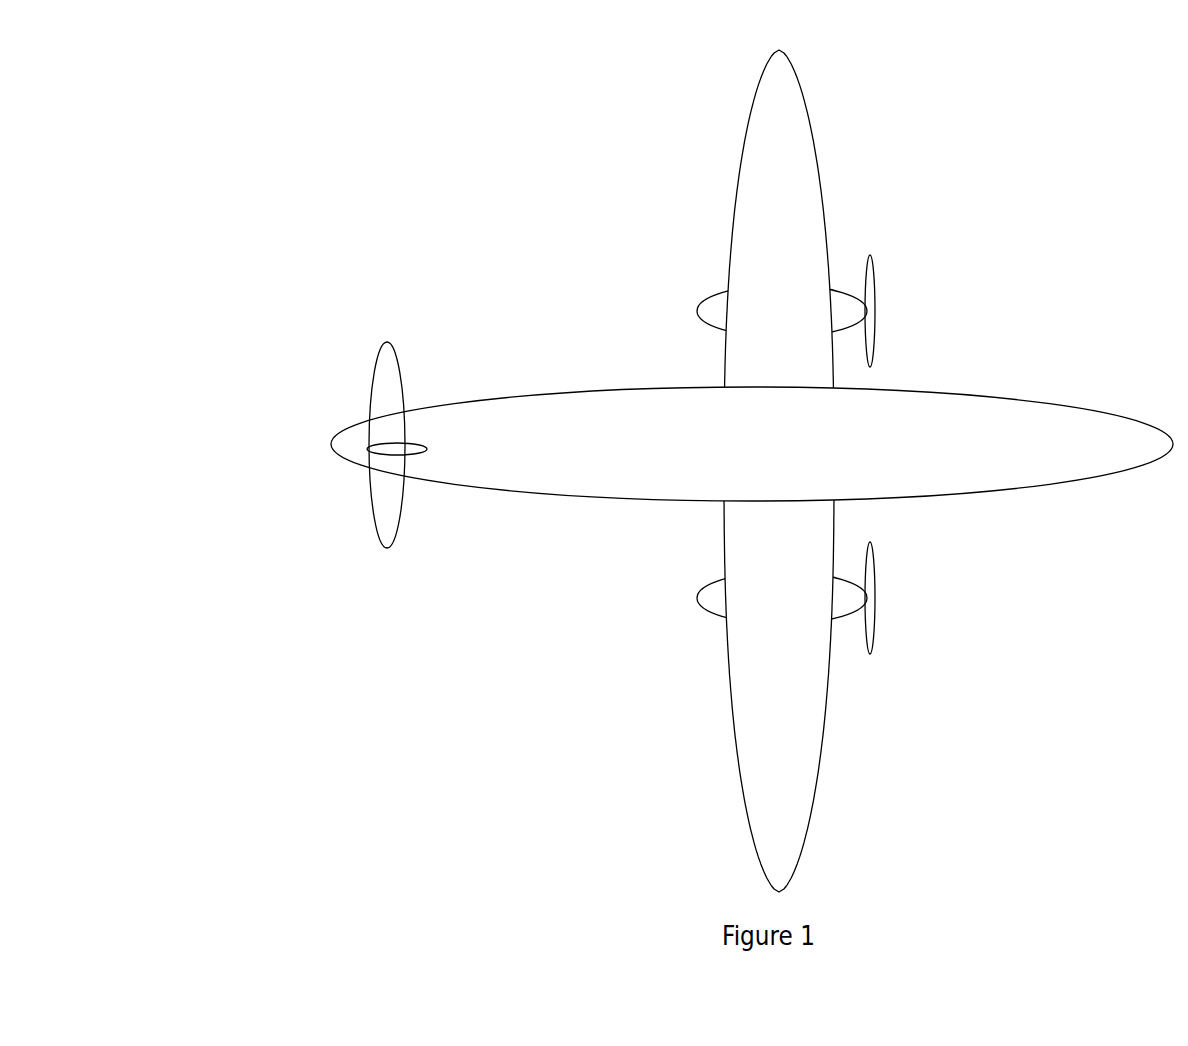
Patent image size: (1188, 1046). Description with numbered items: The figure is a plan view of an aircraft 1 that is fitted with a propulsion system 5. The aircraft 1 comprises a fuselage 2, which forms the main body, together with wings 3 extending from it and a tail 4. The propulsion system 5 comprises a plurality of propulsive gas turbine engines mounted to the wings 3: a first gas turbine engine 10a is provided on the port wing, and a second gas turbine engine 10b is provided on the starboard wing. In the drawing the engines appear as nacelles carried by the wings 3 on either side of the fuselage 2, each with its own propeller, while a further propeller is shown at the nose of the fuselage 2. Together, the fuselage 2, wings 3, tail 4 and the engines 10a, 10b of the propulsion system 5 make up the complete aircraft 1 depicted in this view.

The aircraft 1 is at (652, 471).
The fuselage 2 is at (557, 391).
The wings 3 is at (724, 574).
The tail 4 is at (372, 517).
The propulsion system 5 is at (675, 117).
The first gas turbine engine 10a is at (725, 294).
The second gas turbine engine 10b is at (838, 617).